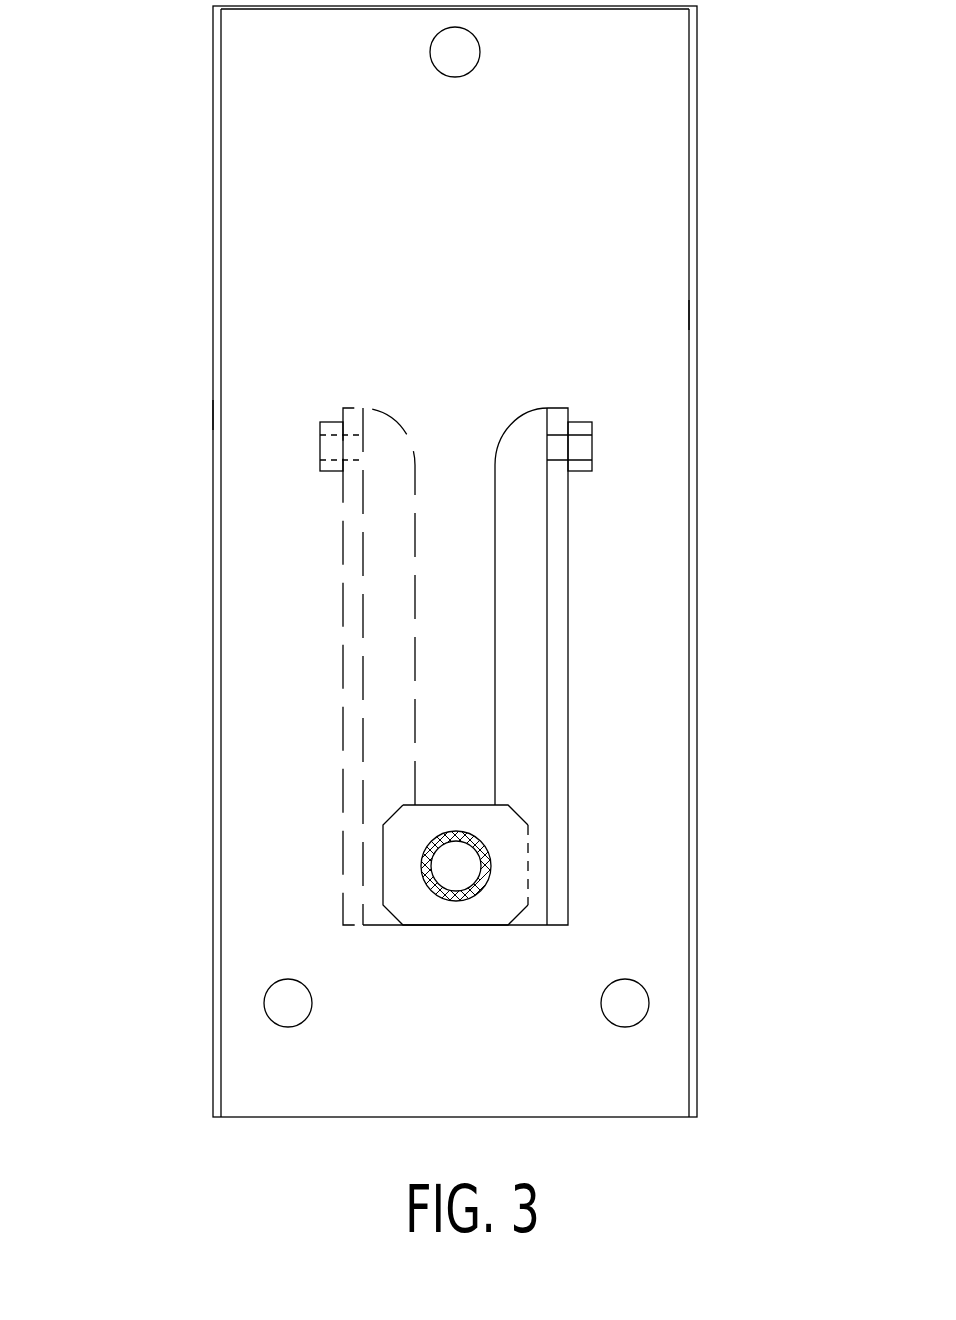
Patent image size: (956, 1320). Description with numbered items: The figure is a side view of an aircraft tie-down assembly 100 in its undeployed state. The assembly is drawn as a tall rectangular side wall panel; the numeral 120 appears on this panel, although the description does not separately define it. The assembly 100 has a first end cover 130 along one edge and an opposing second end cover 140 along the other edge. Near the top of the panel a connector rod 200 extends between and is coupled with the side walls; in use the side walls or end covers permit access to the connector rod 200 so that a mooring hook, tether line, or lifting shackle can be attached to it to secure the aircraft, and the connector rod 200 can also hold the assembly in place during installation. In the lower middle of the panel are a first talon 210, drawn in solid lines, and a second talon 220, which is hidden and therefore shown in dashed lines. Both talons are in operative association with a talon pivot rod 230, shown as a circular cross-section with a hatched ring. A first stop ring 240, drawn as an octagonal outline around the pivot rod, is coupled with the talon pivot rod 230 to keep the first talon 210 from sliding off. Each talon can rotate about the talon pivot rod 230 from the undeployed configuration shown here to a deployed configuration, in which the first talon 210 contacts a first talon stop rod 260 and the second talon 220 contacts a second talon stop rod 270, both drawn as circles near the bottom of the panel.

The tie-down assembly 100 is at (145, 112).
The base plate 120 is at (482, 257).
The first end cover 130 is at (698, 316).
The second end cover 140 is at (212, 418).
The connector rod 200 is at (480, 62).
The first talon 210 is at (572, 695).
The second talon 220 is at (341, 663).
The talon pivot rod 230 is at (460, 866).
The first stop ring 240 is at (415, 868).
The first talon stop rod 260 is at (650, 995).
The second talon stop rod 270 is at (263, 990).